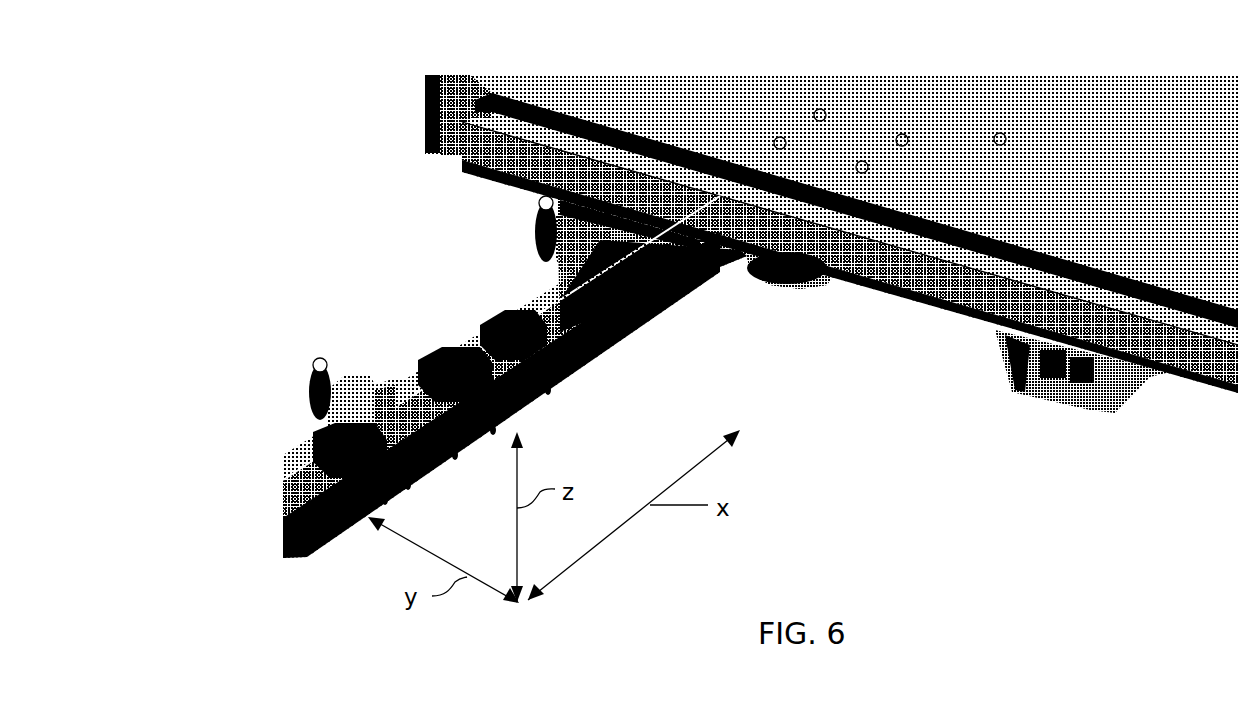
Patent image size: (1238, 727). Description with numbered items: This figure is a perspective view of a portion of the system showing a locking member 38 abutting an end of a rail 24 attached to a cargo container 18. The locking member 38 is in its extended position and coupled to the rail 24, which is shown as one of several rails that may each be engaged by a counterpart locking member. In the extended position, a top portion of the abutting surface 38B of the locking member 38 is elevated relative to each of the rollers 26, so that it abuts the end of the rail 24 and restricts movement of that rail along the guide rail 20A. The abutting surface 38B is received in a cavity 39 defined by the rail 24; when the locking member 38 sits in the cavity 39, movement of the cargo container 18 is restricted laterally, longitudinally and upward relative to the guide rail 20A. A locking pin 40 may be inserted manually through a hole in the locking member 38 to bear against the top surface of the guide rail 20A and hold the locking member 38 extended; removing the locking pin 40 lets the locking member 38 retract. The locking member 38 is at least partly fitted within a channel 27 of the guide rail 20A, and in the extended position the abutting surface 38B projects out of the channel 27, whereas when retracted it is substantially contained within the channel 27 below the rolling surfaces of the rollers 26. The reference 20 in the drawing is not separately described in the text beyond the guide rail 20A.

The cargo container 18 is at (430, 107).
The cavity 39 is at (608, 228).
The rail 24 is at (703, 262).
The lower frame 20 is at (614, 250).
The channel 27 is at (540, 388).
The roller 26 is at (478, 322).
The guide rail 20A is at (392, 370).
The abutting surface 38B is at (343, 390).
The locking pin 40 is at (537, 247).
The locking member 38 is at (538, 288).